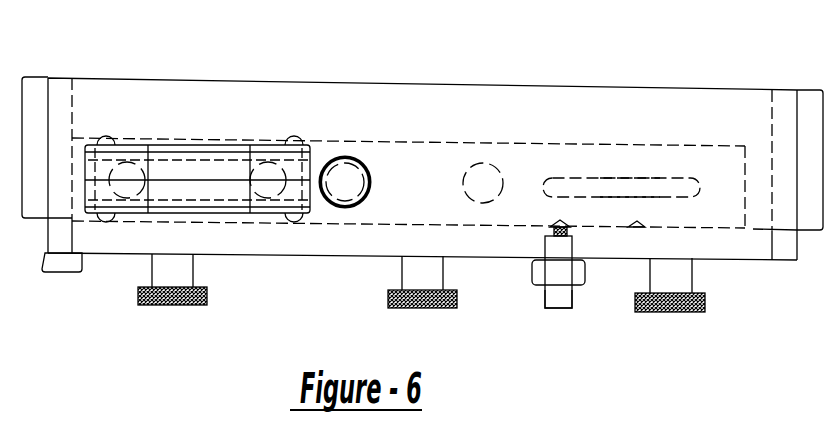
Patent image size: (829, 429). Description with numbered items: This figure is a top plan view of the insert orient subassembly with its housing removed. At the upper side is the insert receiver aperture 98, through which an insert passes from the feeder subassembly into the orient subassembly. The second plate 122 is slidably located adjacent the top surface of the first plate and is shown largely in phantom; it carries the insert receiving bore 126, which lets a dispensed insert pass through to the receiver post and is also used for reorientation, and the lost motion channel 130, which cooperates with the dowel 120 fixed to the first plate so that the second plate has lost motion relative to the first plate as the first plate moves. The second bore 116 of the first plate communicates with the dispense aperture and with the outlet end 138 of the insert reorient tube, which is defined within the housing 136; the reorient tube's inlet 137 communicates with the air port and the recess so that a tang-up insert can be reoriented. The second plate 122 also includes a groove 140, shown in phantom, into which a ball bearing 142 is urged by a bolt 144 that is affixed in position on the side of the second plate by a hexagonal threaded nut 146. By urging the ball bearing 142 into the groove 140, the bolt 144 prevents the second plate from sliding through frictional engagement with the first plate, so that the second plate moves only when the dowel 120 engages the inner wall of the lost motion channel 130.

The insert receiver aperture 98 is at (348, 156).
The second bore 116 is at (483, 175).
The dowel 120 is at (697, 190).
The second plate 122 is at (418, 155).
The insert receiving bore 126 is at (332, 220).
The lost motion channel 130 is at (602, 187).
The housing 136 is at (143, 148).
The inlet 137 is at (127, 190).
The outlet end 138 is at (273, 217).
The groove 140 is at (558, 217).
The ball bearing 142 is at (545, 237).
The bolt 144 is at (558, 297).
The nut 146 is at (585, 273).